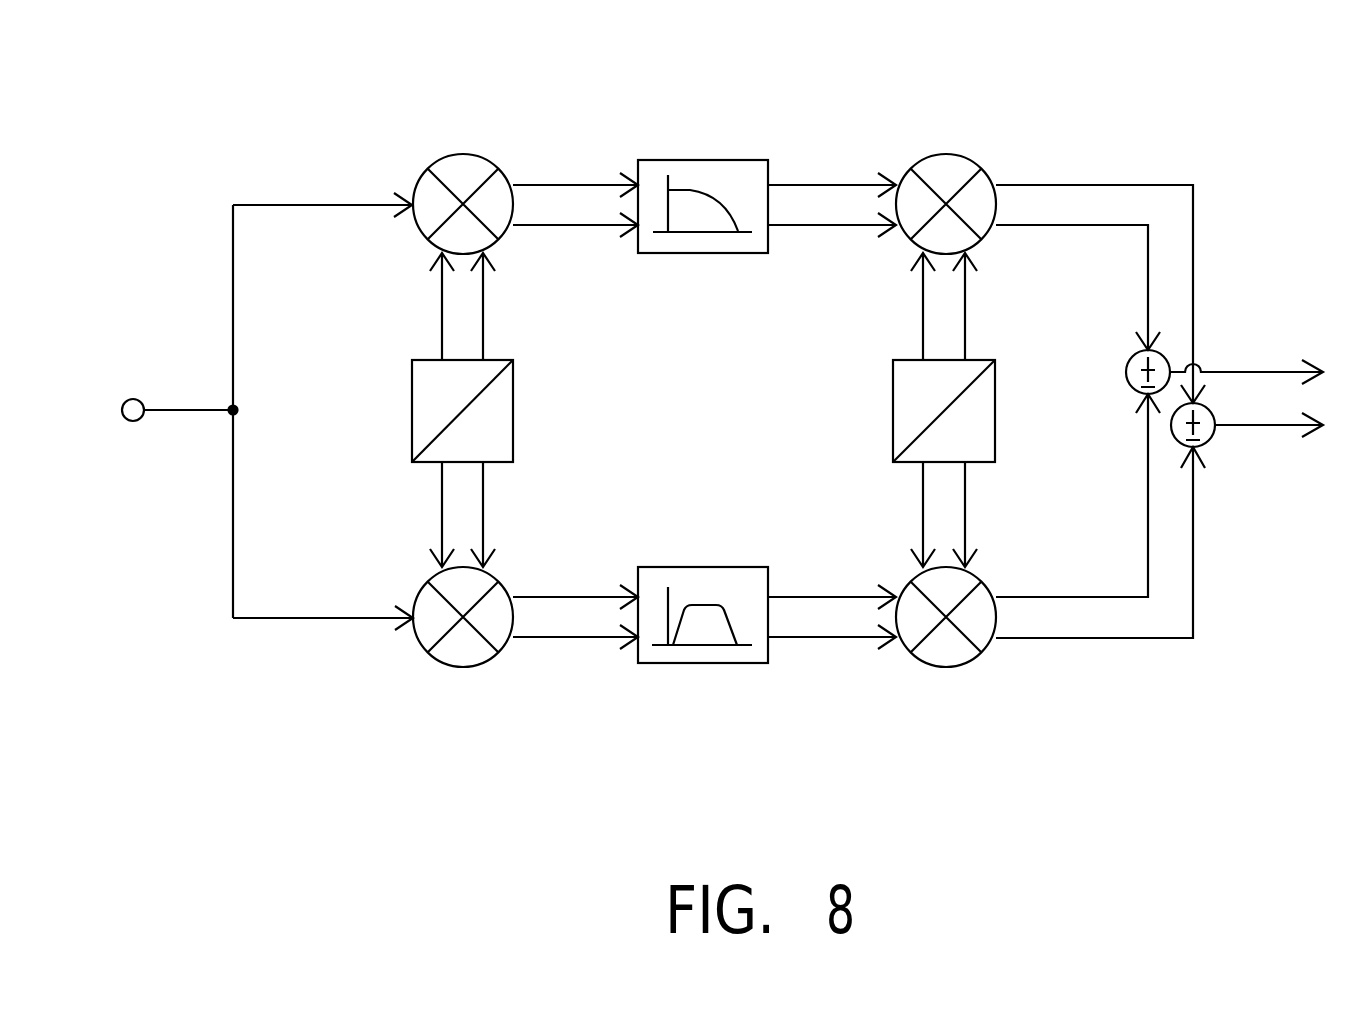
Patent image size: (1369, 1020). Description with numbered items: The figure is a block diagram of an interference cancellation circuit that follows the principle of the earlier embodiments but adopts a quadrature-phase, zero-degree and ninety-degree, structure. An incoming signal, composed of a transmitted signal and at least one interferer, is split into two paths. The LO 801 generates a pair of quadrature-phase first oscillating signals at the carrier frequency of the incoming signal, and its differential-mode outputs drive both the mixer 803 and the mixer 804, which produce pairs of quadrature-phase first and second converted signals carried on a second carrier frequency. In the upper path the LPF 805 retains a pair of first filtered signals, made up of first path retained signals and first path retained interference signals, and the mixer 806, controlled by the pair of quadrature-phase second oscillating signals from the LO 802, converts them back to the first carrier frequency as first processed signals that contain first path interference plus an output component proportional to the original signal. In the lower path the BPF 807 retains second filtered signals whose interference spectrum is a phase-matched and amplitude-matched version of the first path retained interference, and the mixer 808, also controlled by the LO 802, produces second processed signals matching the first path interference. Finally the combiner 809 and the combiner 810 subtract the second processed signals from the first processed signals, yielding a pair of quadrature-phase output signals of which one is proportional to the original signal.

The LO 801 is at (412, 407).
The LO 802 is at (996, 408).
The mixer 803 is at (462, 154).
The mixer 804 is at (462, 668).
The LPF 805 is at (703, 160).
The mixer 806 is at (945, 154).
The BPF 807 is at (703, 663).
The mixer 808 is at (963, 665).
The combiner 809 is at (1170, 355).
The combiner 810 is at (1217, 440).